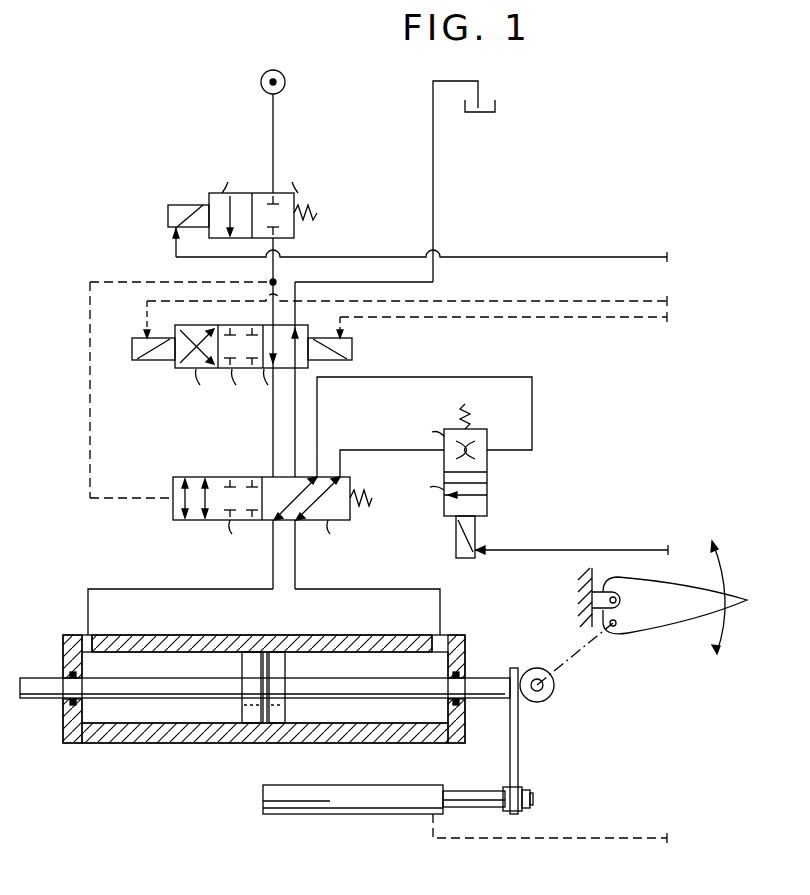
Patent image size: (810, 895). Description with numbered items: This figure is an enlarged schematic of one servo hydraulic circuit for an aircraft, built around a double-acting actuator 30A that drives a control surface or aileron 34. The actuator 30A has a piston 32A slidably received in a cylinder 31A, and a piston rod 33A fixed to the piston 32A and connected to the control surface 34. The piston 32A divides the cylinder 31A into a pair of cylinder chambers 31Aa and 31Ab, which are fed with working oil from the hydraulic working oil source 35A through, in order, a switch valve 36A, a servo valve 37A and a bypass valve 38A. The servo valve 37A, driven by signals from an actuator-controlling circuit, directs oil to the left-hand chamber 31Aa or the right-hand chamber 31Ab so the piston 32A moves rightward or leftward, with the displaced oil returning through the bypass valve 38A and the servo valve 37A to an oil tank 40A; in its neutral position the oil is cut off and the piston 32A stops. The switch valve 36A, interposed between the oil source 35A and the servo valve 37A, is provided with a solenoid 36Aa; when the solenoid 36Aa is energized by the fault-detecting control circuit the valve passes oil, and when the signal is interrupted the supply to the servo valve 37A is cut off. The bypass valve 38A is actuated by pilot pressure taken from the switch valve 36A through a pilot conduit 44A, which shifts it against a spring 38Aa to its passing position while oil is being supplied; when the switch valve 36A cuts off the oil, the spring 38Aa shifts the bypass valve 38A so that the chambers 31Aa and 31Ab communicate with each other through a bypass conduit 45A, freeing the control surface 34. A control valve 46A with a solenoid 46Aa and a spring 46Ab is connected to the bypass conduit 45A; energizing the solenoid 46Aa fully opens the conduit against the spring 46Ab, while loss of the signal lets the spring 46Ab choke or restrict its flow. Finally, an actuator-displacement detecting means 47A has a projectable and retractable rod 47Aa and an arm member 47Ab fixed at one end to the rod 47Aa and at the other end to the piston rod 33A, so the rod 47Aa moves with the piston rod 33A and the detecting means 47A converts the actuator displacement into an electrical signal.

The double-acting actuator 30A is at (75, 630).
The cylinder 31A is at (228, 737).
The cylinder chamber 31Aa is at (206, 629).
The cylinder chamber 31Ab is at (378, 626).
The piston 32A is at (287, 706).
The piston rod 33A is at (501, 680).
The control surface 34 is at (683, 585).
The hydraulic working oil source 35A is at (261, 82).
The switch valve 36A is at (300, 200).
The solenoid 36Aa is at (174, 206).
The servo valve 37A is at (166, 373).
The bypass valve 38A is at (217, 473).
The spring 38Aa is at (368, 507).
The oil tank 40A is at (495, 108).
The pilot conduit 44A is at (108, 281).
The bypass conduit 45A is at (532, 430).
The control valve 46A is at (540, 494).
The solenoid 46Aa is at (468, 558).
The spring 46Ab is at (480, 398).
The actuator-displacement detecting means 47A is at (332, 814).
The rod 47Aa is at (476, 791).
The arm member 47Ab is at (518, 776).